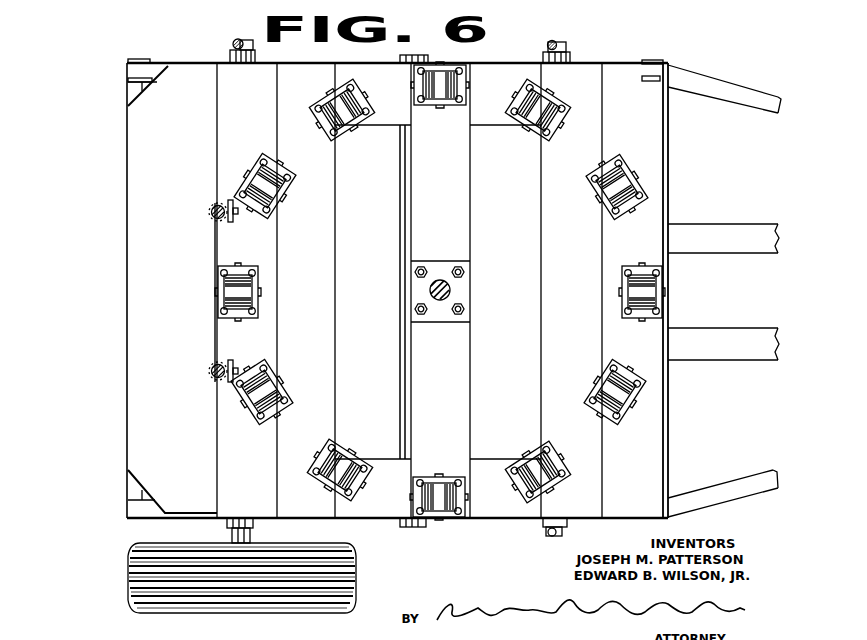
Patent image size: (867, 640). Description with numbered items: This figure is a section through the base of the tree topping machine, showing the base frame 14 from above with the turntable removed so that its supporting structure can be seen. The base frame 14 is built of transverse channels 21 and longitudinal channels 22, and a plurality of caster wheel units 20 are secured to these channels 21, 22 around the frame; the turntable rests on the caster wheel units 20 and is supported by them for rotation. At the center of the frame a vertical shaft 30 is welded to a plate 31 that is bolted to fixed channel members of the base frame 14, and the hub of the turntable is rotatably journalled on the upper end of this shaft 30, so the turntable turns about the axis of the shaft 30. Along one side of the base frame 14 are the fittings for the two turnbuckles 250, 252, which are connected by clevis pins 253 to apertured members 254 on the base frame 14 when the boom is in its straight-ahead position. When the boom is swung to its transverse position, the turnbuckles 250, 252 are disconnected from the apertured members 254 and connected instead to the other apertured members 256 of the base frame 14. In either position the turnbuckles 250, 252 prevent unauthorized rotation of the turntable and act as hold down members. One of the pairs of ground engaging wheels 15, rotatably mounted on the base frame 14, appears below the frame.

The base frame 14 is at (668, 150).
The ground engaging wheels 15 is at (327, 545).
The caster wheel units 20 is at (600, 185).
The transverse channels 21 is at (642, 486).
The longitudinal channels 22 is at (498, 78).
The vertical shaft 30 is at (450, 290).
The plate 31 is at (443, 262).
The turnbuckle 250 is at (212, 372).
The turnbuckle 252 is at (212, 207).
The clevis pins 253 is at (212, 213).
The apertured members 254 is at (215, 200).
The apertured members 256 is at (133, 79).